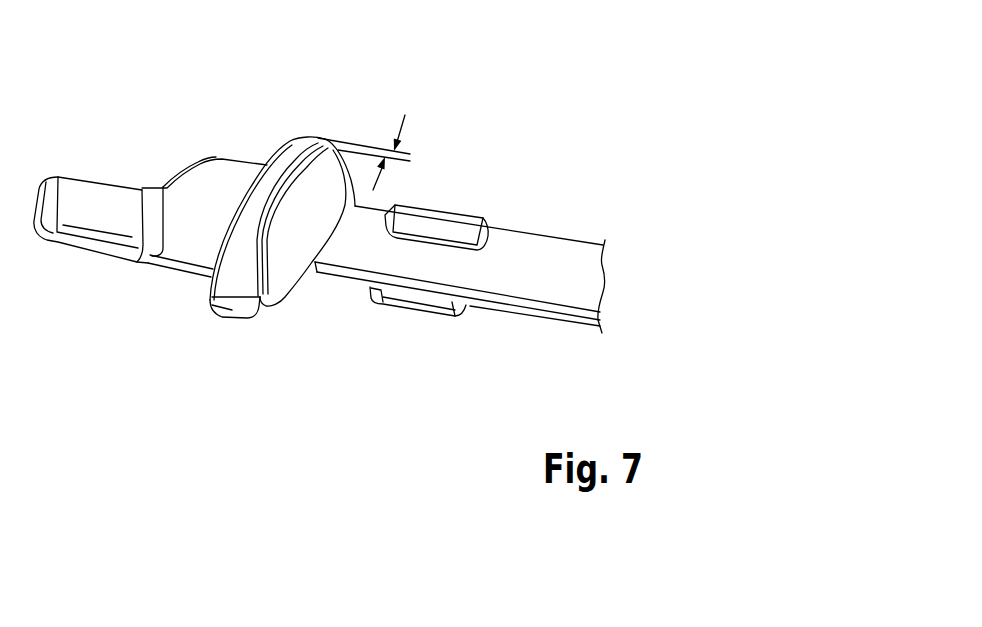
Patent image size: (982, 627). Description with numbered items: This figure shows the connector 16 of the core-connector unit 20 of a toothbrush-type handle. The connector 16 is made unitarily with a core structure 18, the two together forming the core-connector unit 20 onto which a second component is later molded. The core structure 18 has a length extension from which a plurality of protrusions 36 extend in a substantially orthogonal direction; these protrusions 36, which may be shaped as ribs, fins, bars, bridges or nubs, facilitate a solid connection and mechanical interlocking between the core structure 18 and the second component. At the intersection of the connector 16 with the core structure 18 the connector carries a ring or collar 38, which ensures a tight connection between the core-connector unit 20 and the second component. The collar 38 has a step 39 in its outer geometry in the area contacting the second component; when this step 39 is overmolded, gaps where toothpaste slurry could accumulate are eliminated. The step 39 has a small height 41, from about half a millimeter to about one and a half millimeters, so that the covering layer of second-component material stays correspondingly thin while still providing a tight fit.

The connector 16 is at (80, 232).
The core structure 18 is at (509, 277).
The core-connector unit 20 is at (176, 142).
The protrusions 36 is at (402, 299).
The ring/collar 38 is at (273, 162).
The step 39 is at (308, 150).
The height 41 is at (410, 154).